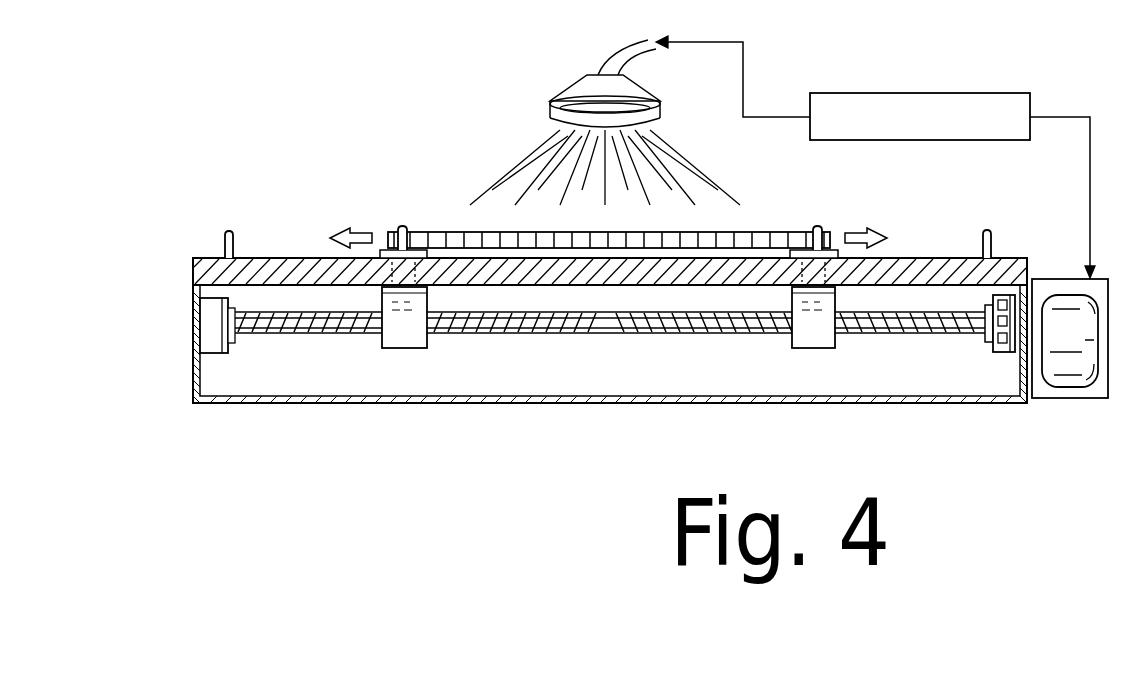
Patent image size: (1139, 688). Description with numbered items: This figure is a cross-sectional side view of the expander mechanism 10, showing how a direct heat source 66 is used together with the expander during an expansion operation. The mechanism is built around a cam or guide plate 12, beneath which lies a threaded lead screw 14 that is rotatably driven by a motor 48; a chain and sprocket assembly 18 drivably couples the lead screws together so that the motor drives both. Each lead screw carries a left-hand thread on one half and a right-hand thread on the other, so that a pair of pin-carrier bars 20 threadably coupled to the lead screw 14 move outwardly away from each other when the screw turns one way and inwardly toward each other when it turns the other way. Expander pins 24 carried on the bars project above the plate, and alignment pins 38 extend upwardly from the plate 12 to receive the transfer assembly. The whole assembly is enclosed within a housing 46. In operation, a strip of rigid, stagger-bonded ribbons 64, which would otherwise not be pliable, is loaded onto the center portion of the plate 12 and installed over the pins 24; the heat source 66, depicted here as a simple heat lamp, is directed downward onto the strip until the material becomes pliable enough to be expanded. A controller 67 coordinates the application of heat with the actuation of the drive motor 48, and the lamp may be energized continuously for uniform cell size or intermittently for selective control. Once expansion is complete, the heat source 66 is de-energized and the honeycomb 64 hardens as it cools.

The expander mechanism 10 is at (236, 440).
The guide plate 12 is at (1013, 258).
The lead screw 14 is at (592, 334).
The chain and sprocket assembly 18 is at (1036, 279).
The pin-carrier bar 20 is at (390, 340).
The expander pin 24 is at (396, 222).
The alignment pin 38 is at (223, 243).
The housing 46 is at (497, 405).
The motor 48 is at (1070, 341).
The strip of stagger-bonded ribbons 64 is at (775, 232).
The direct heat source 66 is at (577, 95).
The controller 67 is at (910, 93).